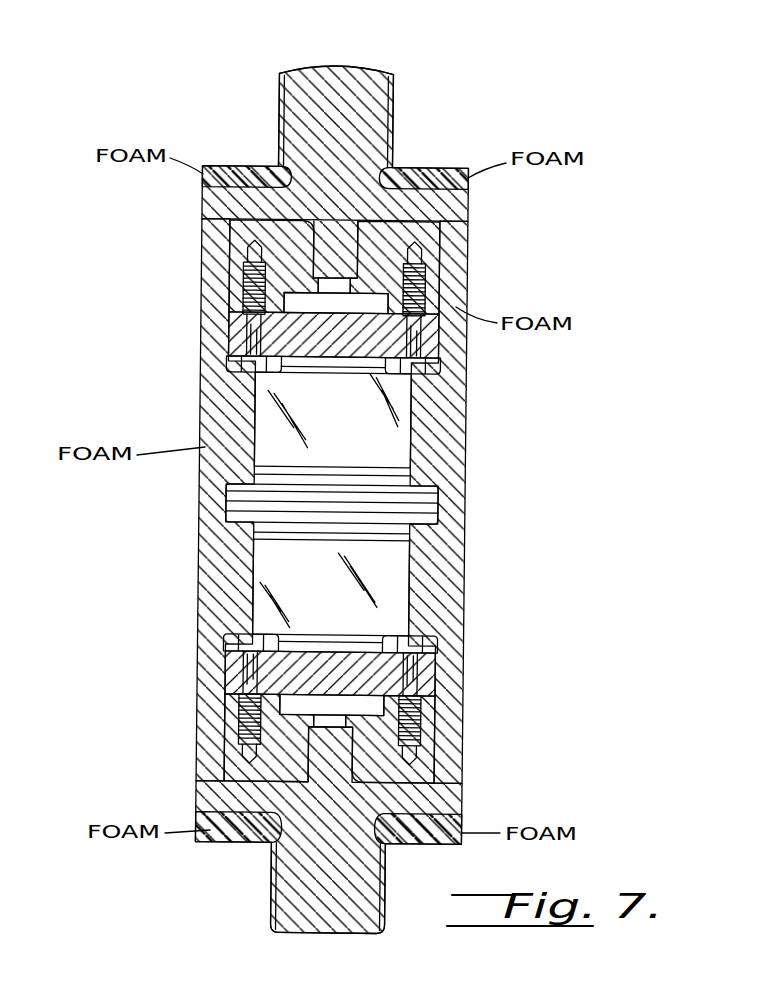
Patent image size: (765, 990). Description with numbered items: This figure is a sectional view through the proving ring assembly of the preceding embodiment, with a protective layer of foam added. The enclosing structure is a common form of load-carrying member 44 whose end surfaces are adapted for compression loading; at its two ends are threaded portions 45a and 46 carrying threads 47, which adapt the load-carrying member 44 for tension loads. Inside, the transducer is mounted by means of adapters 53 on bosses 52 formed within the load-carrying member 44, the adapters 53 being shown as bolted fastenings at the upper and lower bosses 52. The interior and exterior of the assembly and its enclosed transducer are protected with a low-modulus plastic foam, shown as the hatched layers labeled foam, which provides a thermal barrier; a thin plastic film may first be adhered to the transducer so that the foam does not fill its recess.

The load-carrying member 44 is at (332, 424).
The threaded portion 45a is at (378, 68).
The threaded portion 46 is at (285, 867).
The threads 47 is at (394, 108).
The bosses 52 is at (214, 231).
The adapters 53 is at (232, 264).